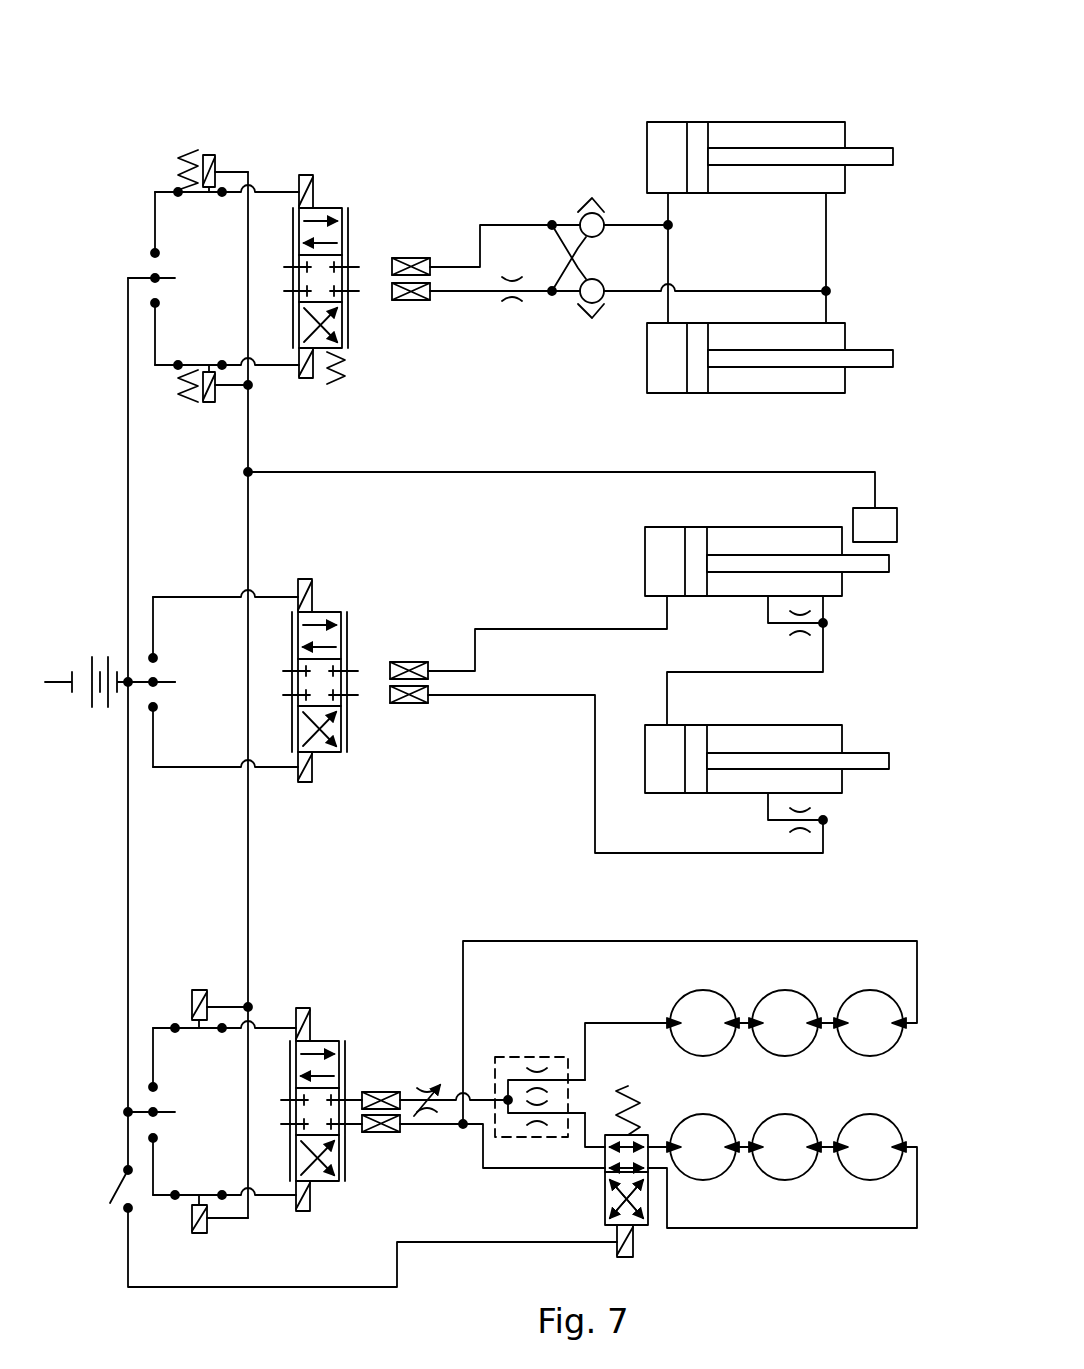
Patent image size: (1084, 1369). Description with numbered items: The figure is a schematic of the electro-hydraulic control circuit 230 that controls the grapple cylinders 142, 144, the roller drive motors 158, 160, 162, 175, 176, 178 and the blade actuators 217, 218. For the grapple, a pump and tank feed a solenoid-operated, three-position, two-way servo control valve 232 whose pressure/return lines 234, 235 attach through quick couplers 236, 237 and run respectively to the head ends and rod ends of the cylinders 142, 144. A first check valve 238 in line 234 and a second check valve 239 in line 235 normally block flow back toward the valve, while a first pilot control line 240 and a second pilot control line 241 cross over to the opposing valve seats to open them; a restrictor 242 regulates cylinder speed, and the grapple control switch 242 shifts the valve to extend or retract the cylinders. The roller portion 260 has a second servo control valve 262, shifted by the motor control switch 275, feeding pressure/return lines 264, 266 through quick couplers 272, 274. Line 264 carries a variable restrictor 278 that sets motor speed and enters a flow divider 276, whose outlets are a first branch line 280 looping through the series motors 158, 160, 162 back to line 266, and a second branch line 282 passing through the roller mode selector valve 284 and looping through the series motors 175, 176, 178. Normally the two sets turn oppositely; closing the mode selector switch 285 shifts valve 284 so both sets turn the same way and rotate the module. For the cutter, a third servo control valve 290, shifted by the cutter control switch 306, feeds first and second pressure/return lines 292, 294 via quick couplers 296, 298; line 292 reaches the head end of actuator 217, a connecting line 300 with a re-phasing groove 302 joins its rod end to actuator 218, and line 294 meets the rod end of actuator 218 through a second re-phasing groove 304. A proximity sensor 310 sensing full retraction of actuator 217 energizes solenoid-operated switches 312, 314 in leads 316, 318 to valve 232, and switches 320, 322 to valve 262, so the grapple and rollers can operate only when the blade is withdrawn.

The grapple cylinder 142 is at (757, 122).
The grapple cylinder 144 is at (757, 393).
The roller drive motor 158 is at (705, 990).
The roller drive motor 160 is at (790, 990).
The roller drive motor 162 is at (855, 1055).
The roller drive motor 175 is at (715, 1180).
The roller drive motor 176 is at (800, 1180).
The roller drive motor 178 is at (862, 1115).
The blade actuator 217 is at (730, 527).
The blade actuator 218 is at (652, 725).
The electro-hydraulic control circuit 230 is at (205, 78).
The servo control valve 232 is at (342, 235).
The pressure/return line 234 is at (465, 262).
The pressure/return line 235 is at (455, 292).
The quick coupler 236 is at (410, 258).
The quick coupler 237 is at (408, 300).
The first check valve 238 is at (592, 212).
The second check valve 239 is at (598, 303).
The first pilot control line 240 is at (565, 245).
The second pilot control line 241 is at (588, 255).
The restrictor / grapple control switch 242 is at (150, 265).
The roller drive motor control portion 260 is at (445, 918).
The second servo control valve 262 is at (339, 1063).
The pressure/return line 264 is at (480, 1097).
The pressure/return line 266 is at (420, 1128).
The quick coupler 272 is at (378, 1092).
The quick coupler 274 is at (378, 1132).
The motor control switch 275 is at (168, 1110).
The flow divider 276 is at (512, 1052).
The variable restrictor 278 is at (437, 1080).
The first branch line 280 is at (545, 941).
The second branch line 282 is at (660, 1135).
The roller mode selector valve 284 is at (605, 1195).
The mode selector switch 285 is at (112, 1195).
The third servo control valve 290 is at (341, 645).
The first pressure/return line 292 is at (460, 667).
The second pressure/return line 294 is at (458, 698).
The quick coupler 296 is at (410, 662).
The quick coupler 298 is at (408, 703).
The connecting line 300 is at (763, 672).
The re-phasing groove 302 is at (768, 615).
The second re-phasing groove 304 is at (768, 812).
The cutter control switch 306 is at (165, 670).
The proximity sensor 310 is at (893, 508).
The solenoid-operated switch 312 is at (209, 155).
The solenoid-operated switch 314 is at (209, 402).
The lead 316 is at (236, 172).
The lead 318 is at (280, 367).
The solenoid-operated switch 320 is at (197, 990).
The solenoid-operated switch 322 is at (197, 1233).